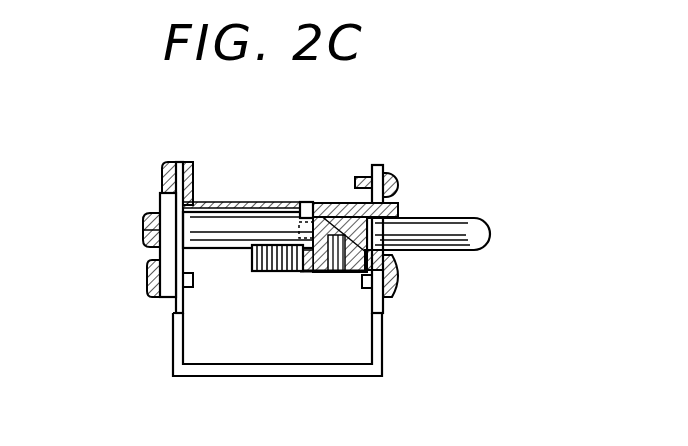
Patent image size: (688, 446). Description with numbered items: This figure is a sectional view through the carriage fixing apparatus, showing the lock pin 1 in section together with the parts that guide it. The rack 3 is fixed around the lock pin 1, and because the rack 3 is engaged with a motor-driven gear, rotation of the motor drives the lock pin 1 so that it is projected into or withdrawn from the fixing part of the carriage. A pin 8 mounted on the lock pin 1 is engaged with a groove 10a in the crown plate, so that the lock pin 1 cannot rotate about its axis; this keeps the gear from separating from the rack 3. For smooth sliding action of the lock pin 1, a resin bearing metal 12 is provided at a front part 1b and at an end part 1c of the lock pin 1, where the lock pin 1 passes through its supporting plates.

The lock pin 1 is at (470, 252).
The front part 1b is at (397, 232).
The end part 1c is at (150, 210).
The rack 3 is at (278, 273).
The pin 8 is at (306, 202).
The groove 10a is at (258, 202).
The resin bearing metal 12 is at (160, 255).